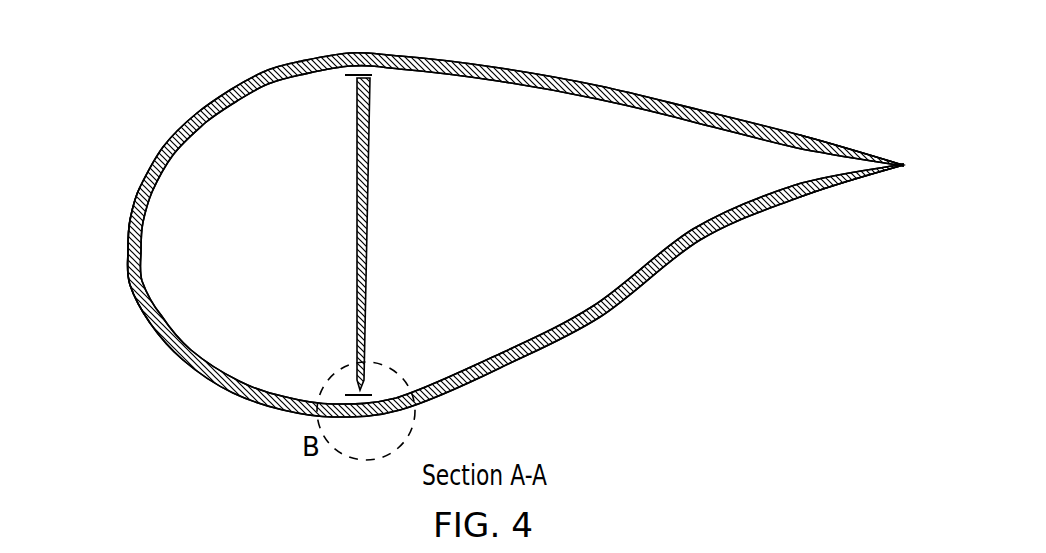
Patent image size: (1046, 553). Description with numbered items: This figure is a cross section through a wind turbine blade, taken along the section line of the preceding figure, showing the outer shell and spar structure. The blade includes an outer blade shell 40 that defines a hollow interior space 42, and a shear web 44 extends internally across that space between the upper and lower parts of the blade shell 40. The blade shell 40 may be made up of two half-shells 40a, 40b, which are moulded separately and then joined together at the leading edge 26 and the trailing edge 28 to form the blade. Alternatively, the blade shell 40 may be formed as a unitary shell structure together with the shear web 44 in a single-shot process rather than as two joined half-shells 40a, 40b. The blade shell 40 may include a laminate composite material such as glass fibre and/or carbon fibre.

The leading edge 26 is at (128, 236).
The trailing edge 28 is at (905, 167).
The outer blade shell 40 is at (612, 90).
The half-shell 40a is at (228, 391).
The half-shell 40b is at (289, 62).
The hollow interior space 42 is at (273, 252).
The shear web 44 is at (372, 242).